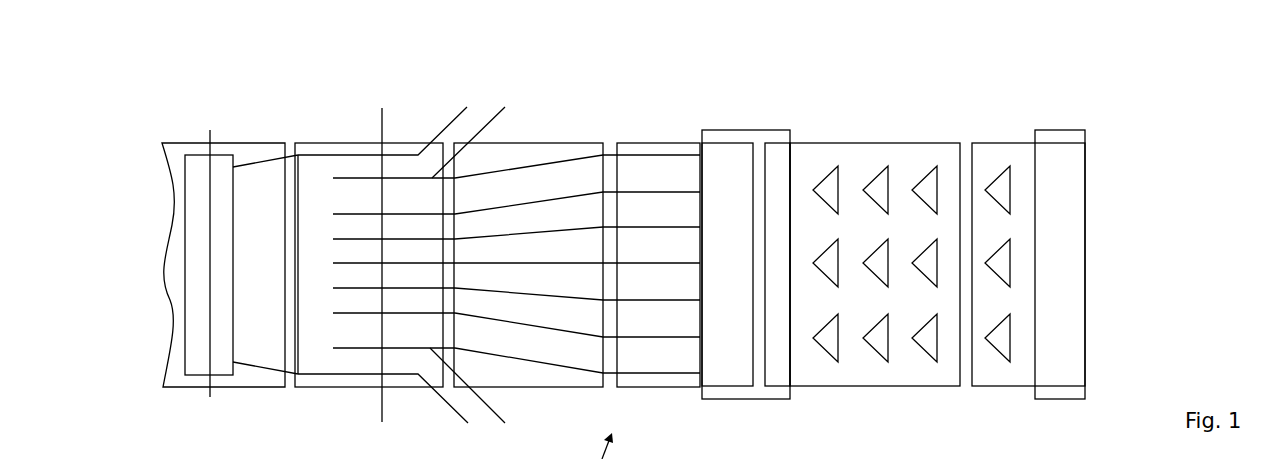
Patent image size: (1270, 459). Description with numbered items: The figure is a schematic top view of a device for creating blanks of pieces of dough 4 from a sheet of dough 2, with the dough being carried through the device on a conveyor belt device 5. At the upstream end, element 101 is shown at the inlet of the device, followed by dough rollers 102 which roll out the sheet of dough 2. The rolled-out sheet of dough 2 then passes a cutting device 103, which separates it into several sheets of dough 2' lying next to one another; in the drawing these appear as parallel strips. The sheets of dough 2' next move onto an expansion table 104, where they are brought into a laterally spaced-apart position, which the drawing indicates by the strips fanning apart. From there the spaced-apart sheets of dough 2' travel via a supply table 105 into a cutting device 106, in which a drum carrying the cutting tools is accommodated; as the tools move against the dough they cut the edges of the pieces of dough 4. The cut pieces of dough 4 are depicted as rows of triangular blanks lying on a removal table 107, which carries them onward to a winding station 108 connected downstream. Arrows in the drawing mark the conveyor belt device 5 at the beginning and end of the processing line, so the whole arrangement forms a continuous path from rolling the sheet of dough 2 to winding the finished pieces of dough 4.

The input optical fiber / housing 101 is at (252, 377).
The dough rollers 102 is at (203, 342).
The cutting device 103 is at (380, 110).
The sheet of dough 2 is at (372, 233).
The sheets of dough 2' is at (545, 270).
The expansion table 104 is at (510, 152).
The supply table 105 is at (668, 143).
The cutting device 106 is at (735, 133).
The removal table 107 is at (847, 148).
The pieces of dough 4 is at (923, 183).
The conveyor belt device 5 is at (314, 110).
The winding station 108 is at (1055, 167).